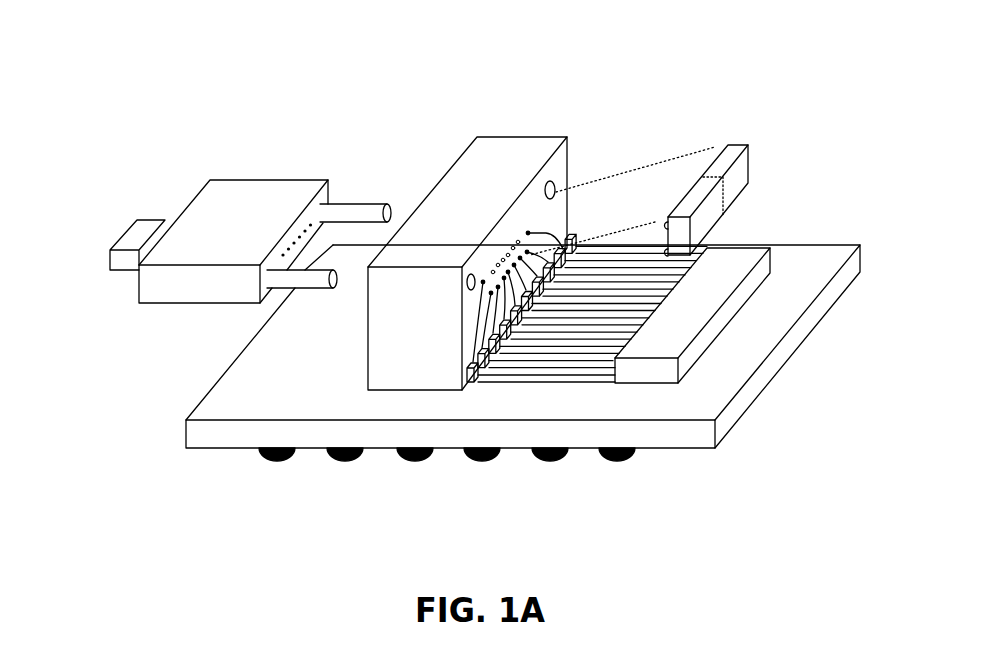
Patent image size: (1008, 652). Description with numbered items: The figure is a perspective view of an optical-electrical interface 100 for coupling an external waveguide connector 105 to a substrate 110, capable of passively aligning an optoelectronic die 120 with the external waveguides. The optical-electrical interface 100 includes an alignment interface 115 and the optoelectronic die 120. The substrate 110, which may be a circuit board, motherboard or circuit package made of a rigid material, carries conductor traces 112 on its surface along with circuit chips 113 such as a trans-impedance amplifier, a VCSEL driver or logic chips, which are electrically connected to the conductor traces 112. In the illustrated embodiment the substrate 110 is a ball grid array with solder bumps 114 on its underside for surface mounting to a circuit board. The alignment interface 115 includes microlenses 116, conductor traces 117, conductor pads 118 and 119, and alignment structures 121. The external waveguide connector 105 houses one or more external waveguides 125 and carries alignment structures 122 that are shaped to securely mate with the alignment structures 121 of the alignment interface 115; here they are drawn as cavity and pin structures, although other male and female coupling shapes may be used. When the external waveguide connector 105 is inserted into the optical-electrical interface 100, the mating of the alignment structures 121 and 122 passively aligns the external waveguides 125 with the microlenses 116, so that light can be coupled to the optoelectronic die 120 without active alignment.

The optical-electrical interface 100 is at (641, 89).
The external waveguide connector 105 is at (235, 237).
The substrate 110 is at (372, 445).
The conductor traces 112 is at (476, 378).
The circuit chips 113 is at (709, 313).
The solder bumps 114 is at (634, 468).
The alignment interface 115 is at (425, 337).
The microlenses 116 is at (497, 241).
The conductor traces 117 is at (470, 366).
The conductor pads 118 is at (528, 231).
The conductor pads 119 is at (474, 375).
The optoelectronic die 120 is at (748, 163).
The alignment structures 121 is at (539, 202).
The alignment structures 122 is at (367, 205).
The external waveguides 125 is at (287, 230).